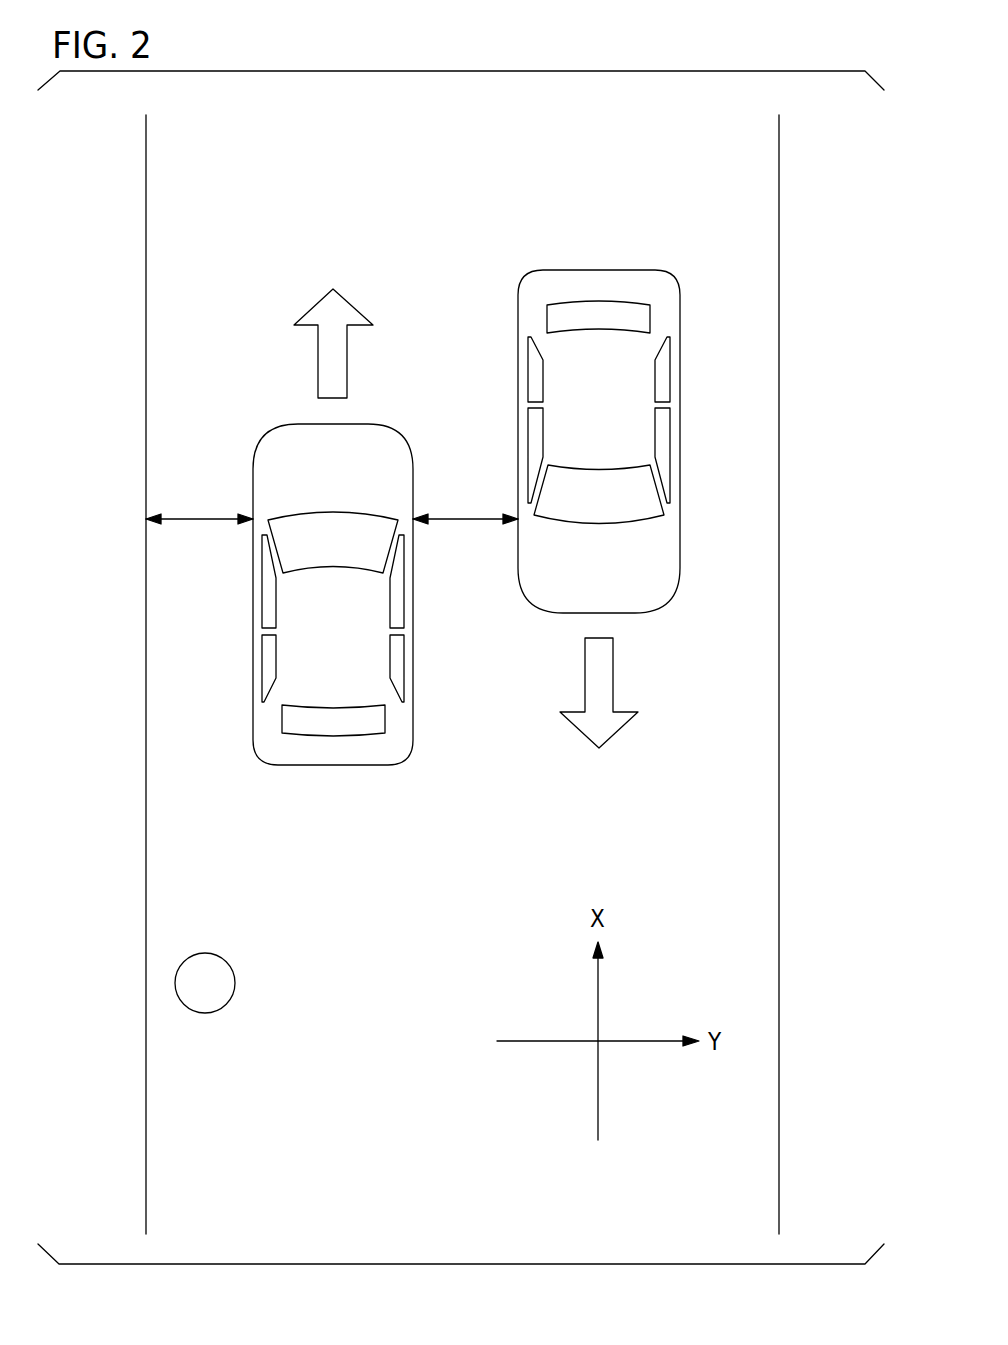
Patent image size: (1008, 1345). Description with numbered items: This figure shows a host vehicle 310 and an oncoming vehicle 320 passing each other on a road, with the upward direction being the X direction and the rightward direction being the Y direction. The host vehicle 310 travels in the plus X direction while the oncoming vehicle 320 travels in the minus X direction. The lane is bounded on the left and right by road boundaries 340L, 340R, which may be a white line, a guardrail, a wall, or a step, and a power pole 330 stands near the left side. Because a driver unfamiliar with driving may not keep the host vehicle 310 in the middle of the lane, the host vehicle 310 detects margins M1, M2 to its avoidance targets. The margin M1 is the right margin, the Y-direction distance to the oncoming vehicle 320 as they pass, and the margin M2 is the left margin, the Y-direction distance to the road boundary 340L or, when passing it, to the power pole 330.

The host vehicle 310 is at (333, 767).
The oncoming vehicle 320 is at (599, 268).
The power pole 330 is at (205, 1013).
The road boundary 340L is at (146, 238).
The road boundary 340R is at (779, 238).
The margin M1 is at (465, 502).
The margin M2 is at (199, 502).